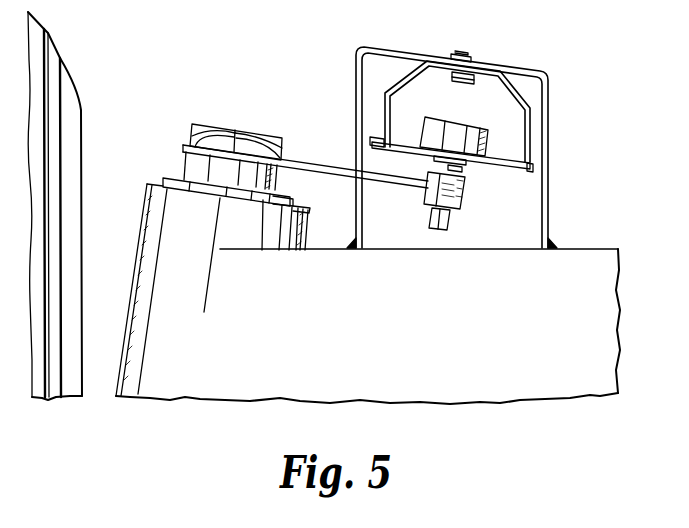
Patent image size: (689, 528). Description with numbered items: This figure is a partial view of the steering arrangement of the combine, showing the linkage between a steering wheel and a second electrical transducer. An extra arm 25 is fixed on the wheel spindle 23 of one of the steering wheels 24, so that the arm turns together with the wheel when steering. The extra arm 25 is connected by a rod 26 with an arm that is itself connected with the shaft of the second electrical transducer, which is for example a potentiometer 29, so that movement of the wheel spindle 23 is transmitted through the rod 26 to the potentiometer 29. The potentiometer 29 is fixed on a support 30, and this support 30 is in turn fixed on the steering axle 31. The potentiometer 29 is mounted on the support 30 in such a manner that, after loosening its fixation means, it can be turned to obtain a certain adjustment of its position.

The wheel spindle 23 is at (190, 168).
The steering wheel 24 is at (70, 109).
The extra arm 25 is at (186, 152).
The rod 26 is at (318, 167).
The potentiometer 29 is at (500, 99).
The support 30 is at (356, 88).
The steering axle 31 is at (585, 258).